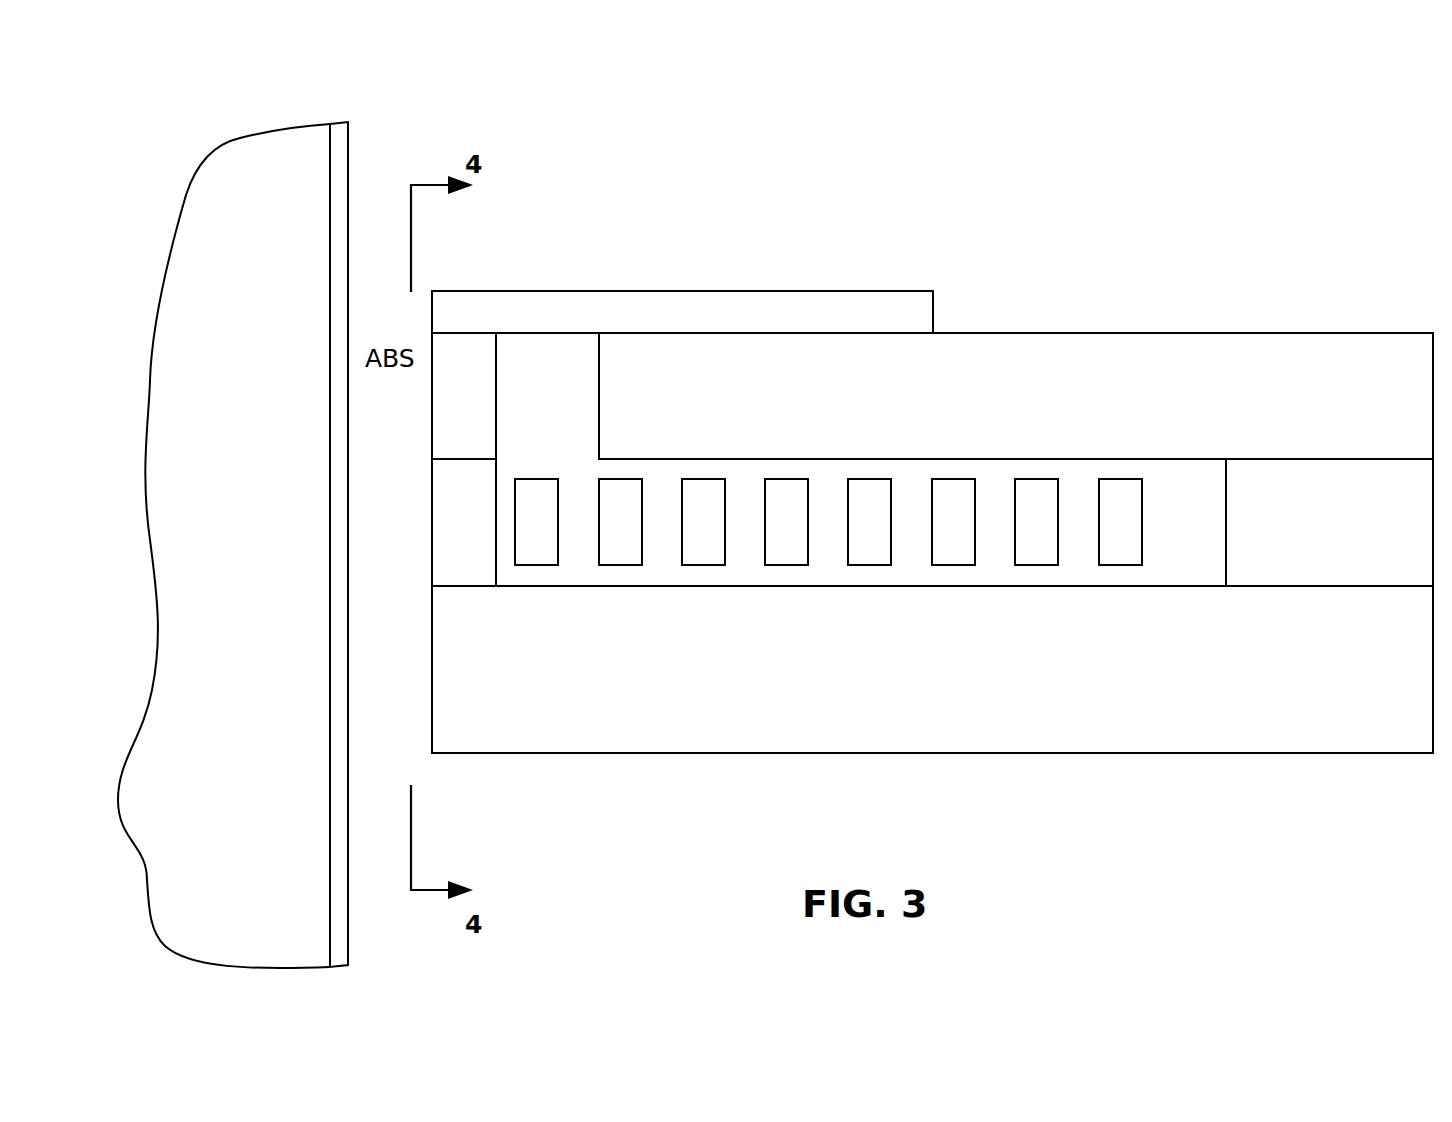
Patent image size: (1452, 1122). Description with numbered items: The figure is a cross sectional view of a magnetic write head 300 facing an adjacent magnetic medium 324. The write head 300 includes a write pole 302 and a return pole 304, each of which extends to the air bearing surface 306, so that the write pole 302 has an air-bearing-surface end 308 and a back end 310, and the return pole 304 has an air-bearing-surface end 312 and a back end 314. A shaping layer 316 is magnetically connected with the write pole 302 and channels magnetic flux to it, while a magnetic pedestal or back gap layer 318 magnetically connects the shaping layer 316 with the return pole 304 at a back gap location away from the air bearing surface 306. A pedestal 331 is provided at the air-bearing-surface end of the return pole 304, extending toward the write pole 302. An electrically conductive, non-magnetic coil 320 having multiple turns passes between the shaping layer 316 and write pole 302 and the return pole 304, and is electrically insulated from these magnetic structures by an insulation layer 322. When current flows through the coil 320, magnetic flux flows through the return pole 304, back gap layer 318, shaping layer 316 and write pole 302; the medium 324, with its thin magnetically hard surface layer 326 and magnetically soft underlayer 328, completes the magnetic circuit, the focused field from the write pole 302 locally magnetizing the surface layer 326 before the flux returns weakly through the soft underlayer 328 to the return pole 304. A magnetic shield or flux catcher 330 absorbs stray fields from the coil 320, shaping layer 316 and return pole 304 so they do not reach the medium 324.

The magnetic write head 300 is at (955, 183).
The write pole 302 is at (630, 312).
The return pole 304 is at (1037, 663).
The air bearing surface 306 is at (432, 432).
The ABS end of the write pole 308 is at (434, 305).
The back end of the write pole 310 is at (940, 305).
The ABS end of the return pole 312 is at (432, 665).
The back end of the return pole 314 is at (1432, 668).
The shaping layer 316 is at (1080, 388).
The back gap layer 318 is at (1370, 514).
The coil 320 is at (1042, 567).
The insulation layer 322 is at (570, 422).
The magnetic medium 324 is at (238, 140).
The magnetically hard surface layer 326 is at (342, 142).
The magnetically soft underlayer 328 is at (205, 277).
The magnetic shield 330 is at (462, 428).
The pedestal 331 is at (460, 513).